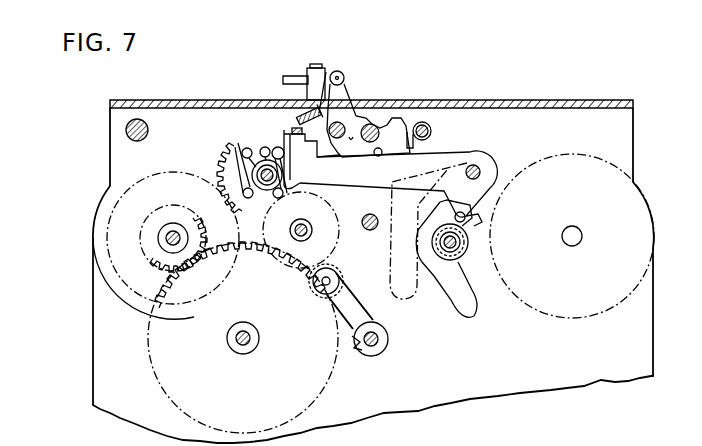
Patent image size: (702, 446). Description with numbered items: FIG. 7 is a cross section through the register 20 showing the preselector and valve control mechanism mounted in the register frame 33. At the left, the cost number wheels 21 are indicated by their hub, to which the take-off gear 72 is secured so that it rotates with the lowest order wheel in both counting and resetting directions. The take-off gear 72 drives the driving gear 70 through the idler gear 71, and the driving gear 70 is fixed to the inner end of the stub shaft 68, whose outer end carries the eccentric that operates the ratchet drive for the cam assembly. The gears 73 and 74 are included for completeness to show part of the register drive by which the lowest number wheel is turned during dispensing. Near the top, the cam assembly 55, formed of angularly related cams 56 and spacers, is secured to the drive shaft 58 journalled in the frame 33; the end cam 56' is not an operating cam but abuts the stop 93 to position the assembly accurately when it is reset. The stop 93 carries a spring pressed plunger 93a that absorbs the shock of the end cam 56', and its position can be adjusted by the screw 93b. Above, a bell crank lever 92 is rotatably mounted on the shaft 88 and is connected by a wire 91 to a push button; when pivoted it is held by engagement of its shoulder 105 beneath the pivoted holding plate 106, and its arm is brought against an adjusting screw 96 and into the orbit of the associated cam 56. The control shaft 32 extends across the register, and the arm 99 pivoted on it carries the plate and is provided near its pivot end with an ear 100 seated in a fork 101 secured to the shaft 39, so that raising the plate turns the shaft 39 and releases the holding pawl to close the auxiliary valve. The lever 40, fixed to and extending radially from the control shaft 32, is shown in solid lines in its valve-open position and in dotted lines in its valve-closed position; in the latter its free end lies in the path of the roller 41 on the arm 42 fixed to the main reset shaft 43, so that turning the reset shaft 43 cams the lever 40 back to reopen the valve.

The register 20 is at (93, 333).
The cost number wheels 21 is at (98, 240).
The control shaft 32 is at (473, 166).
The register frame 33 is at (628, 117).
The shaft 39 is at (456, 242).
The lever 40 is at (458, 298).
The roller 41 is at (340, 273).
The arm 42 is at (352, 282).
The main reset shaft 43 is at (378, 340).
The cam assembly 55 is at (247, 157).
The cams 56 is at (258, 171).
The end cam 56' is at (265, 122).
The drive shaft 58 is at (266, 191).
The stub shaft 68 is at (305, 225).
The driving gear 70 is at (251, 256).
The idler gear 71 is at (227, 254).
The take-off gear 72 is at (160, 256).
The gear 73 is at (204, 183).
The gear 74 is at (215, 150).
The shaft 88 is at (341, 127).
The wire 91 is at (291, 76).
The bell crank lever 92 is at (344, 77).
The stop 93 is at (300, 138).
The spring pressed plunger 93a is at (275, 140).
The screw 93b is at (326, 72).
The adjusting screw 96 is at (300, 152).
The arm 99 is at (368, 177).
The ear 100 is at (470, 210).
The fork 101 is at (478, 220).
The shoulder 105 is at (409, 133).
The holding plate 106 is at (416, 142).